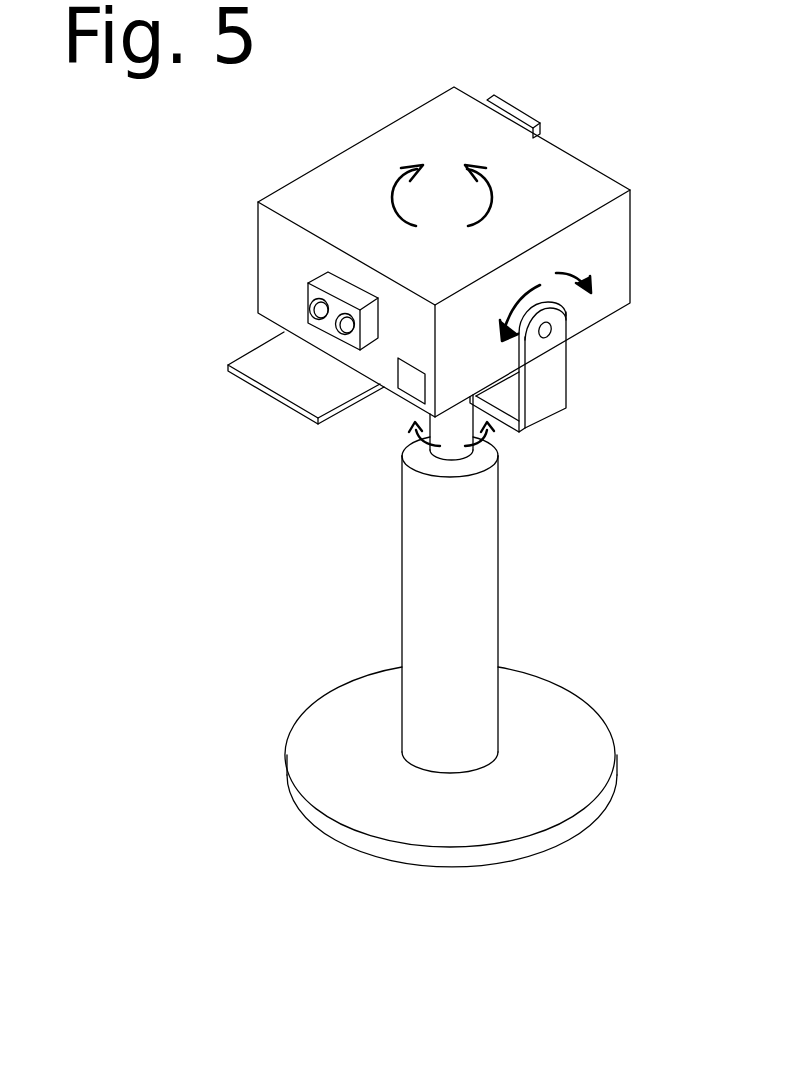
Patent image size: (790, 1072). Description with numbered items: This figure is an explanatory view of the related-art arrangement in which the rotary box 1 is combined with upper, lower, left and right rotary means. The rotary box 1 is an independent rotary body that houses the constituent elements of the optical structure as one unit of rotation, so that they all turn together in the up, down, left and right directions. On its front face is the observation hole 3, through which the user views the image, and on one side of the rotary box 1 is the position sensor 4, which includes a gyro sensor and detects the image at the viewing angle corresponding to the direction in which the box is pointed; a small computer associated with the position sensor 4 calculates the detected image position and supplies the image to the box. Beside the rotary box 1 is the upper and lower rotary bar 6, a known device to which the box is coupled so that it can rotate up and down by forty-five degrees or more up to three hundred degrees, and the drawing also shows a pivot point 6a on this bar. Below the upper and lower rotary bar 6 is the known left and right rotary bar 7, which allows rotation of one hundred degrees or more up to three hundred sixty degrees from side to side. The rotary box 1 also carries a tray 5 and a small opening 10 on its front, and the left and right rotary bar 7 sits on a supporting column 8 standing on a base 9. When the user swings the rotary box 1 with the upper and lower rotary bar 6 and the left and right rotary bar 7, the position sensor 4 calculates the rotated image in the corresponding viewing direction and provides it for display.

The rotary box 1 is at (572, 182).
The observation hole 3 is at (315, 293).
The position sensor 4 is at (513, 110).
The tray 5 is at (268, 378).
The upper and lower rotary bar 6 is at (552, 373).
The hole 6a is at (552, 325).
The left and right rotary bar 7 is at (458, 454).
The pole 8 is at (467, 548).
The base 9 is at (550, 728).
The opening 10 is at (410, 385).